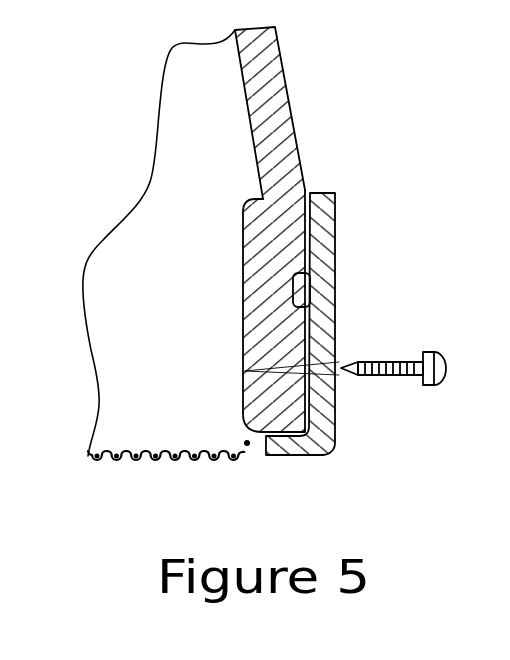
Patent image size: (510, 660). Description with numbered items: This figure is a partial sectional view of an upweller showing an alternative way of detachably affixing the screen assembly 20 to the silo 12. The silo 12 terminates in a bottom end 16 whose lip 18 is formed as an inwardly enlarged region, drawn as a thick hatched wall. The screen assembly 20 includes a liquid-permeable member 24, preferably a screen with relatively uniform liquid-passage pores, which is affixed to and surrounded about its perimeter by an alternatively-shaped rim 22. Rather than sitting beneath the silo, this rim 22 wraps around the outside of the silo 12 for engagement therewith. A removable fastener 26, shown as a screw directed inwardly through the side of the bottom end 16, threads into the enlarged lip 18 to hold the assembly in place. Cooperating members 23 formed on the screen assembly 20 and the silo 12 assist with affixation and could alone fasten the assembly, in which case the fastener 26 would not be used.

The silo 12 is at (287, 95).
The bottom end 16 is at (243, 447).
The lip 18 is at (243, 310).
The screen assembly 20 is at (245, 448).
The rim 22 is at (335, 205).
The cooperating members 23 is at (293, 290).
The liquid-permeable member 24 is at (153, 452).
The removable fasteners 26 is at (375, 377).